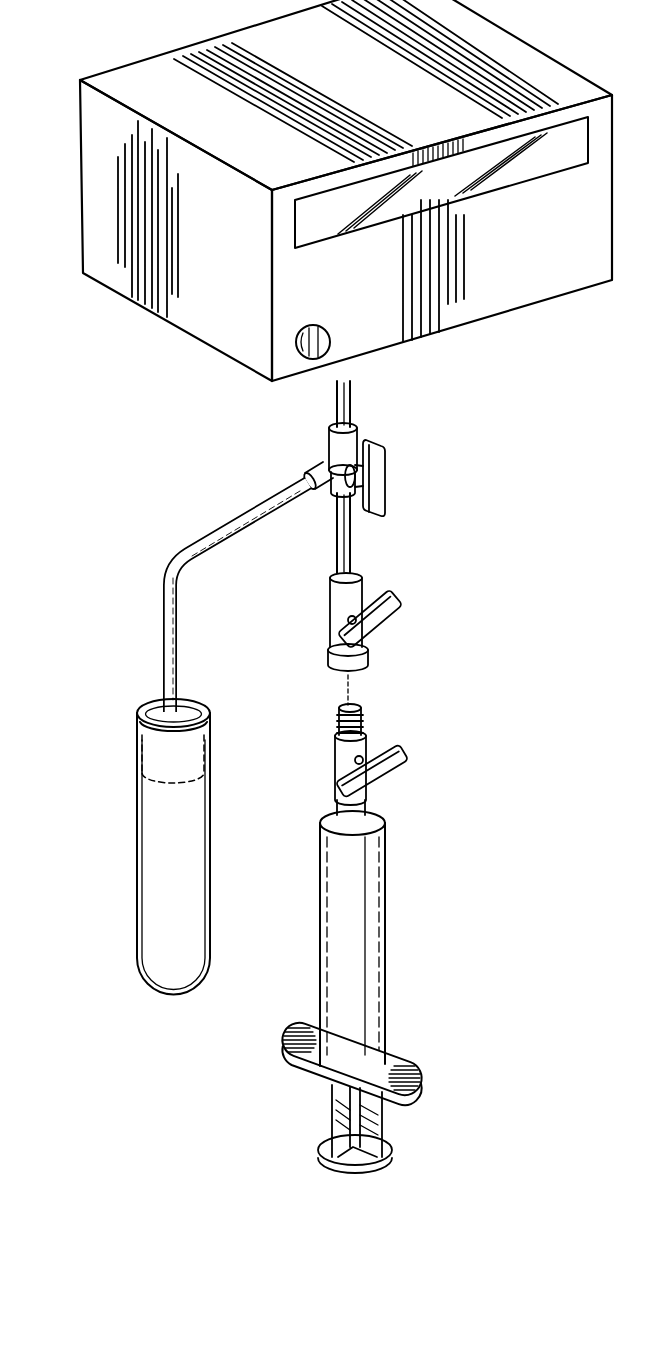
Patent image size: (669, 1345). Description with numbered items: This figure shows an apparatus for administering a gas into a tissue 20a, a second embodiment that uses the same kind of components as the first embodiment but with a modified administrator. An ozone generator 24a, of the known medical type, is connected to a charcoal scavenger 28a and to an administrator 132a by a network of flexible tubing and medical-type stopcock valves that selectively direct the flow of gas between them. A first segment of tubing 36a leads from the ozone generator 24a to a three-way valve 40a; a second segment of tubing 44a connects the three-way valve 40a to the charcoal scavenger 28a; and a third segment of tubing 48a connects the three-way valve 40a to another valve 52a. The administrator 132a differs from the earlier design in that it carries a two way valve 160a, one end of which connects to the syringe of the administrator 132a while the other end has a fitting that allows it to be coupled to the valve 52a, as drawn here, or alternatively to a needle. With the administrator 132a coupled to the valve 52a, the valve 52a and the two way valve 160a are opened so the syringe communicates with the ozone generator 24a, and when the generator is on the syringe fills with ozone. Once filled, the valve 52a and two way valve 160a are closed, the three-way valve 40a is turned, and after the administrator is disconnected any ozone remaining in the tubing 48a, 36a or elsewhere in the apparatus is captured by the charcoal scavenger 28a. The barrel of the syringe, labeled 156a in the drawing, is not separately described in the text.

The apparatus for administering a gas into a tissue 20a is at (134, 50).
The ozone generator 24a is at (575, 45).
The first segment of tubing 36a is at (335, 390).
The three-way valve 40a is at (377, 437).
The second segment of tubing 44a is at (180, 610).
The charcoal scavenger 28a is at (228, 783).
The third segment of tubing 48a is at (352, 550).
The valve 52a is at (395, 603).
The two way valve 160a is at (365, 740).
The administrator 132a is at (420, 858).
The syringe barrel 156a is at (378, 998).